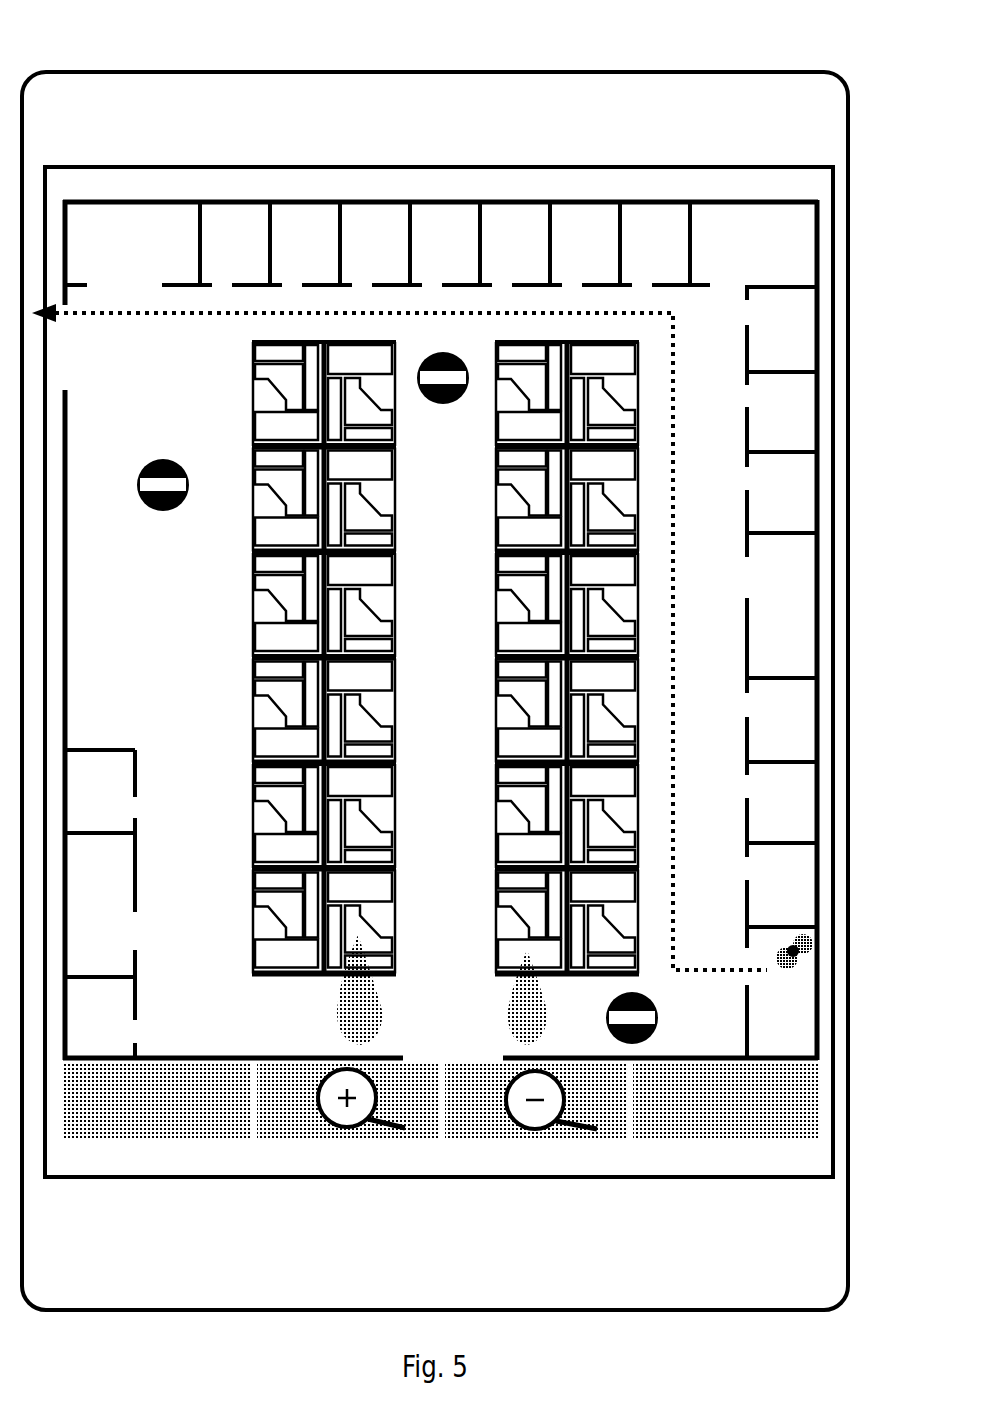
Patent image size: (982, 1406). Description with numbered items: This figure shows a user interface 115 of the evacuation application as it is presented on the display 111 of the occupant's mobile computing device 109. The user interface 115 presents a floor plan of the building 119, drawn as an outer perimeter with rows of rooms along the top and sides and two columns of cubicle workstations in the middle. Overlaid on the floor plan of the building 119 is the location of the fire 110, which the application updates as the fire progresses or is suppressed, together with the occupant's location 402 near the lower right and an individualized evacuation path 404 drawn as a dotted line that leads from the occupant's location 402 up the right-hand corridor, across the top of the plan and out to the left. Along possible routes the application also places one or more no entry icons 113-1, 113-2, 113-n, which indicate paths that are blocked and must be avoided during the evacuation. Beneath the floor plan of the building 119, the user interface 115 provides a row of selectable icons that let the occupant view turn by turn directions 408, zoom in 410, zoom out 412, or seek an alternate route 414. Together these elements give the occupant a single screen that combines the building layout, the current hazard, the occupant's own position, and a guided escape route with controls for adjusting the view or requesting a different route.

The mobile computing device 109 is at (100, 62).
The display 111 is at (133, 167).
The floor plan of the building 119 is at (646, 190).
The no entry icon 113-1 is at (160, 460).
The no entry icon 113-2 is at (455, 354).
The no entry icon 113-n is at (658, 1018).
The fire 110 is at (340, 998).
The individualized evacuation path 404 is at (674, 880).
The occupant's location 402 is at (808, 940).
The user interface 115 is at (433, 1145).
The turn by turn directions icon 408 is at (225, 1140).
The zoom in icon 410 is at (347, 1140).
The zoom out icon 412 is at (530, 1140).
The seek an alternate route icon 414 is at (742, 1140).